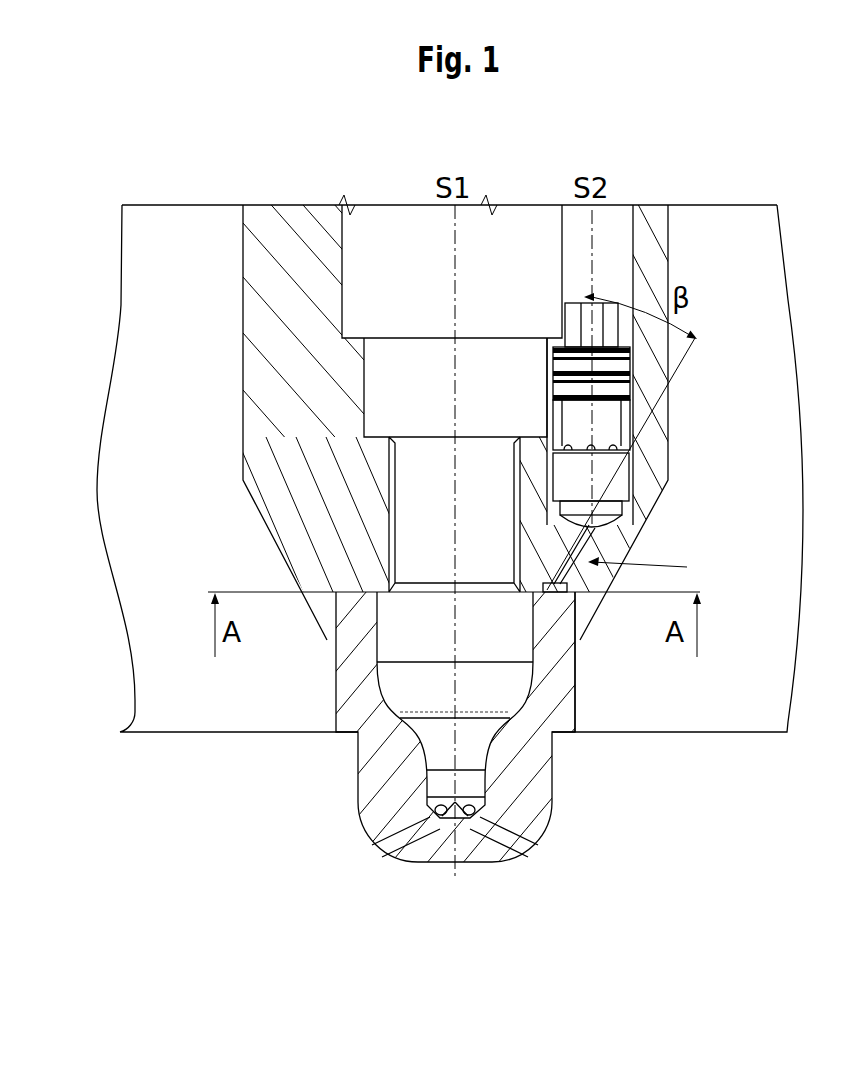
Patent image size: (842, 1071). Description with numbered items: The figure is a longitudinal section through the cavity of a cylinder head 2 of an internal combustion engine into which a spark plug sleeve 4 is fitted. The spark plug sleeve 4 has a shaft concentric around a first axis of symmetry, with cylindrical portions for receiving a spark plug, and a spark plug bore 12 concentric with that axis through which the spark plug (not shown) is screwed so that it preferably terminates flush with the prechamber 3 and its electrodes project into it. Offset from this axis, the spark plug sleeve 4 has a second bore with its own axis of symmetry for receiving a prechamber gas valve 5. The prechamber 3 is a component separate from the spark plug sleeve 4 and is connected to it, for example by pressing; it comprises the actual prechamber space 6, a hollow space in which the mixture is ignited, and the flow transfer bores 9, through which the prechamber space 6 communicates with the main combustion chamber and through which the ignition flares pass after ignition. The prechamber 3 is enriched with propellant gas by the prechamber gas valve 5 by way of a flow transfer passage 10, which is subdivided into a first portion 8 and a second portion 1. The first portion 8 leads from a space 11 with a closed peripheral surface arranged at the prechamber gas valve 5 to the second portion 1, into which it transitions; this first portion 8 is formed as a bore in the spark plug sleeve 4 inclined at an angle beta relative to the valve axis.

The second portion 1 is at (570, 595).
The cylinder head 2 is at (190, 396).
The prechamber 3 is at (538, 758).
The spark plug sleeve 4 is at (650, 250).
The prechamber gas valve 5 is at (580, 415).
The prechamber space 6 is at (432, 651).
The first portion 8 is at (594, 535).
The flow transfer bores 9 is at (523, 830).
The flow transfer passage 10 is at (660, 573).
The space 11 is at (620, 508).
The spark plug bore 12 is at (420, 537).